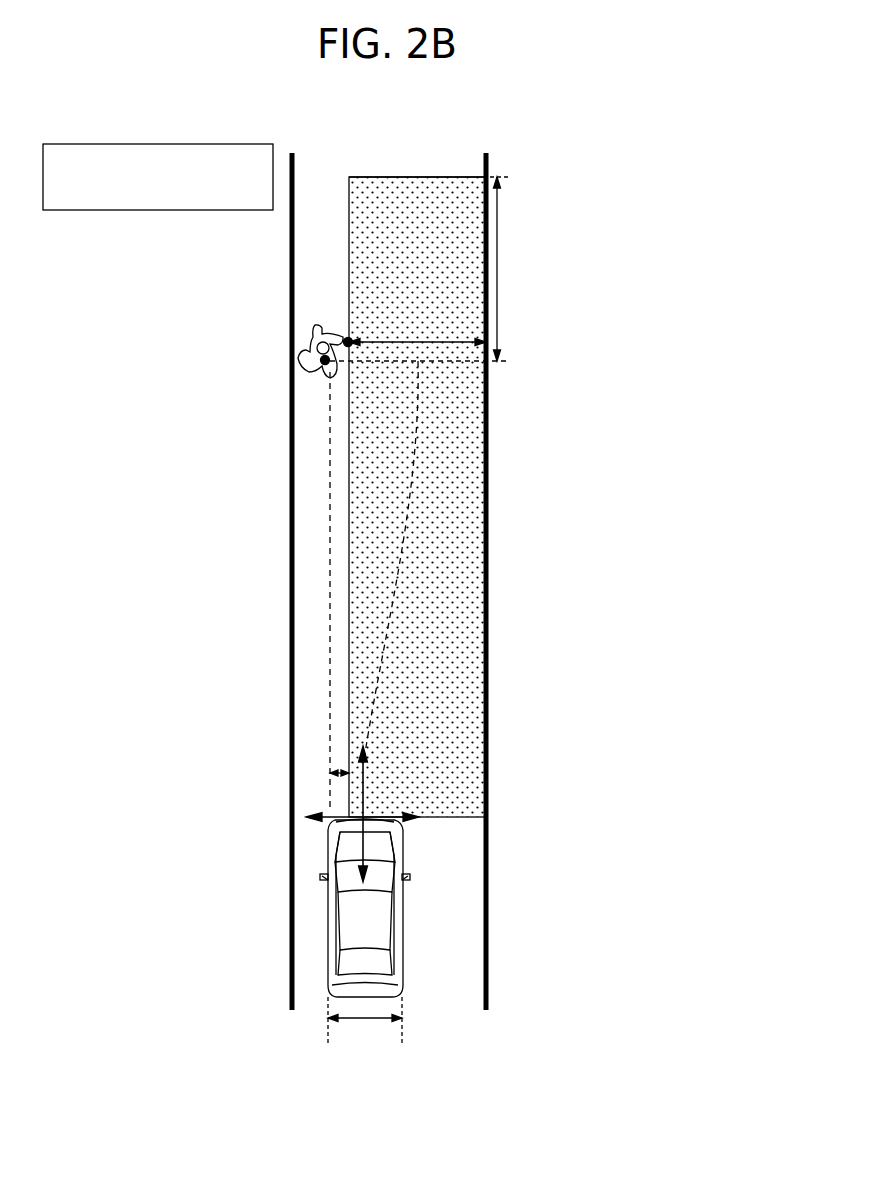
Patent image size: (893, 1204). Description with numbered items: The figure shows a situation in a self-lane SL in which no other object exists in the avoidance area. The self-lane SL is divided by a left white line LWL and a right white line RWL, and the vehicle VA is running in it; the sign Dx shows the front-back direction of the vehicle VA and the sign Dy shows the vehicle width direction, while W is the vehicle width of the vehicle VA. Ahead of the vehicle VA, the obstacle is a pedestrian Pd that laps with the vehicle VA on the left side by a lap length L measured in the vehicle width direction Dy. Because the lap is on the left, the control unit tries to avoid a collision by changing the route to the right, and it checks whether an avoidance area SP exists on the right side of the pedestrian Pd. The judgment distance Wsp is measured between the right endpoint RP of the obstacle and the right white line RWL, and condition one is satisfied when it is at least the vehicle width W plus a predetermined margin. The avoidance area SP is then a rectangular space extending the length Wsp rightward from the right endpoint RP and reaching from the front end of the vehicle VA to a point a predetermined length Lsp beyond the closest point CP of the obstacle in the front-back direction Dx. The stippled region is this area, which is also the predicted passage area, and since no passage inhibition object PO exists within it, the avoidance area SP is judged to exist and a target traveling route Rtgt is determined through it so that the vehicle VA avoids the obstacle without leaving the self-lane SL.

The passage inhibition object PO is at (133, 210).
The left white line LWL is at (290, 450).
The right white line RWL is at (488, 448).
The avoidance area SP is at (458, 176).
The self-lane SL is at (405, 157).
The judgment distance Wsp is at (417, 332).
The predetermined length Lsp is at (432, 269).
The pedestrian Pd is at (307, 352).
The closest point CP is at (322, 362).
The right endpoint RP is at (347, 341).
The target traveling route Rtgt is at (418, 402).
The lap length L is at (336, 771).
The front-back direction Dx is at (379, 814).
The vehicle width direction Dy is at (370, 829).
The vehicle VA is at (404, 921).
The vehicle width W is at (365, 1024).